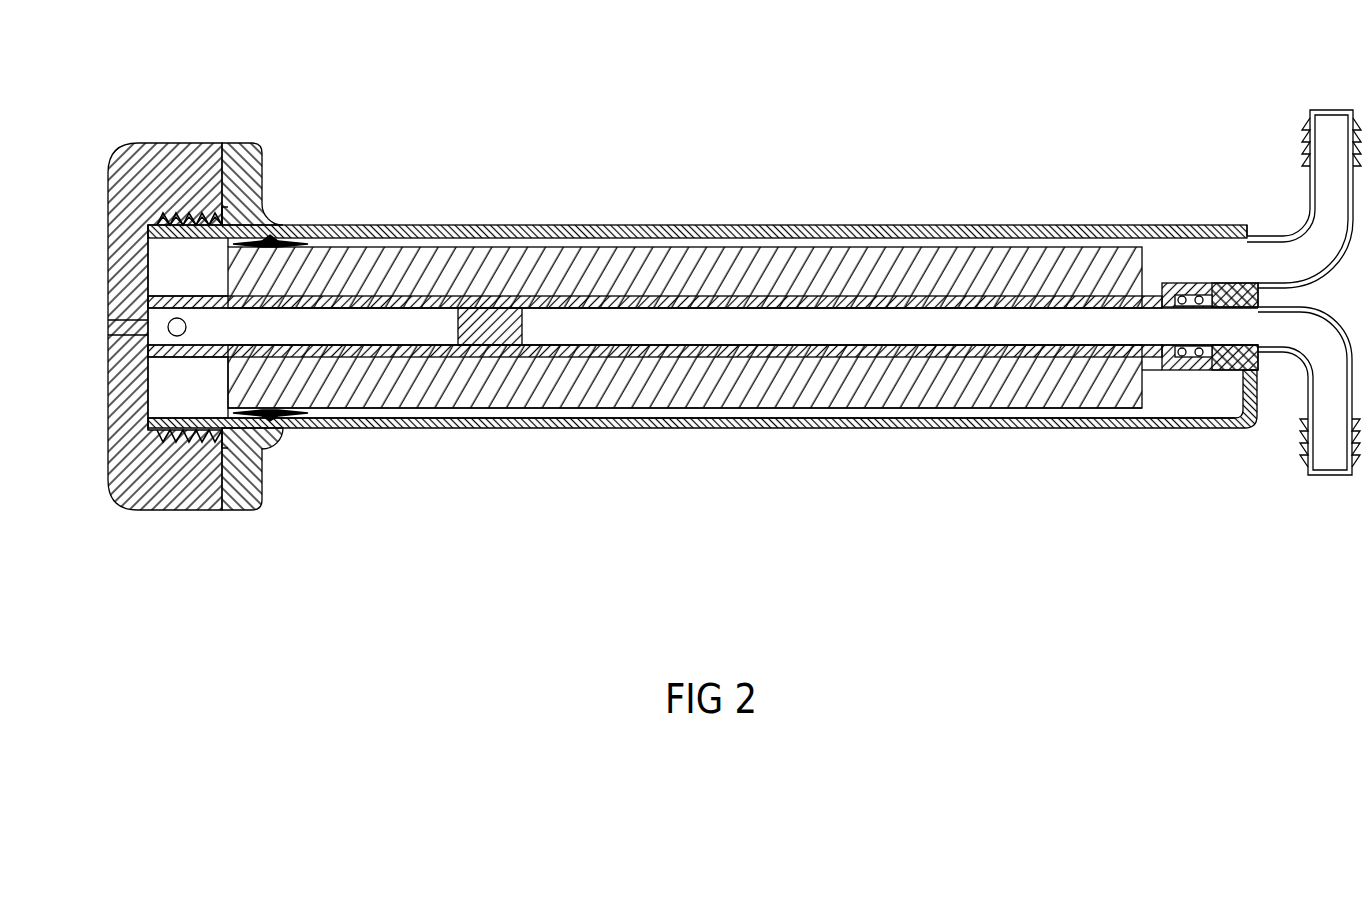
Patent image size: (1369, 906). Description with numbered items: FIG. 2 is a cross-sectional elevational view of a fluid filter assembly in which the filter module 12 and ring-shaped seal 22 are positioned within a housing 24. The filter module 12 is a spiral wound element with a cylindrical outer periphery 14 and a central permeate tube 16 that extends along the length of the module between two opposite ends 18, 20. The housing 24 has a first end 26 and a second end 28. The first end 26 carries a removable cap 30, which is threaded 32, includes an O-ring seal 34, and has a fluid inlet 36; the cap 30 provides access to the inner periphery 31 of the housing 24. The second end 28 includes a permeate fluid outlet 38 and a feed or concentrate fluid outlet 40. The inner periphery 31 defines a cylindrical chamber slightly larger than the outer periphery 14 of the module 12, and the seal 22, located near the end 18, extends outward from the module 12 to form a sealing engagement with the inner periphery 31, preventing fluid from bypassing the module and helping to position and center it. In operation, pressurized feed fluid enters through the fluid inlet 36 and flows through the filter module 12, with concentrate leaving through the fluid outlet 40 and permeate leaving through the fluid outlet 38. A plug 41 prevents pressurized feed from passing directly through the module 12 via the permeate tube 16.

The filter module 12 is at (957, 408).
The cylindrical outer periphery 14 is at (750, 413).
The permeate tube 16 is at (987, 347).
The end 18 is at (227, 400).
The end 20 is at (1148, 395).
The ring-shaped seal 22 is at (313, 430).
The housing 24 is at (465, 228).
The first end 26 is at (263, 158).
The second end 28 is at (1204, 227).
The removable cap 30 is at (192, 143).
The inner periphery 31 is at (840, 416).
The threads 32 is at (167, 220).
The O-ring seal 34 is at (223, 210).
The fluid inlet 36 is at (108, 353).
The permeate fluid outlet 38 is at (1305, 465).
The feed or concentrate fluid outlet 40 is at (1310, 118).
The plug 41 is at (508, 308).